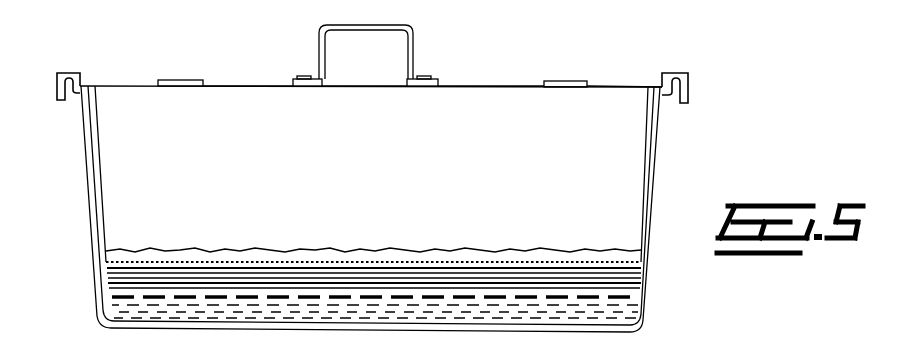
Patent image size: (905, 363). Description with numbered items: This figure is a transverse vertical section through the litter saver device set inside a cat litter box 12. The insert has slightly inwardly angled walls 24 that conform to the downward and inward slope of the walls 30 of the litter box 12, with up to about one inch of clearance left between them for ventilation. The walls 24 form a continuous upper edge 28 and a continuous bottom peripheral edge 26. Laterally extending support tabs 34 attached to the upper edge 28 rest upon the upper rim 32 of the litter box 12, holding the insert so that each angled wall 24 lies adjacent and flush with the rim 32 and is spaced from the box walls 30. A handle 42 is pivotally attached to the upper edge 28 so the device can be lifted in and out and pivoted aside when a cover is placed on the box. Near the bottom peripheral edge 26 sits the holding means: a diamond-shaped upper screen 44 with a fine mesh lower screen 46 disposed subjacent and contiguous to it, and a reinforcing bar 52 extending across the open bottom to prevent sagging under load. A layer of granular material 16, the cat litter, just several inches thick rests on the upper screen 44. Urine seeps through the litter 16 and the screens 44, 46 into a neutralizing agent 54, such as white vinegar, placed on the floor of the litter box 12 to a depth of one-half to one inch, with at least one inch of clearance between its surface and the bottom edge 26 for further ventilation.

The cat litter box 12 is at (351, 209).
The granular material 16 is at (337, 248).
The angled walls 24 is at (97, 147).
The bottom peripheral edge 26 is at (103, 282).
The upper edge 28 is at (483, 87).
The litter box walls 30 is at (660, 153).
The upper rim 32 is at (80, 83).
The support tabs 34 is at (174, 79).
The handles 42 is at (412, 43).
The upper screen 44 is at (155, 262).
The lower screen 46 is at (110, 265).
The reinforcing bar 52 is at (622, 280).
The neutralizing agent 54 is at (612, 304).